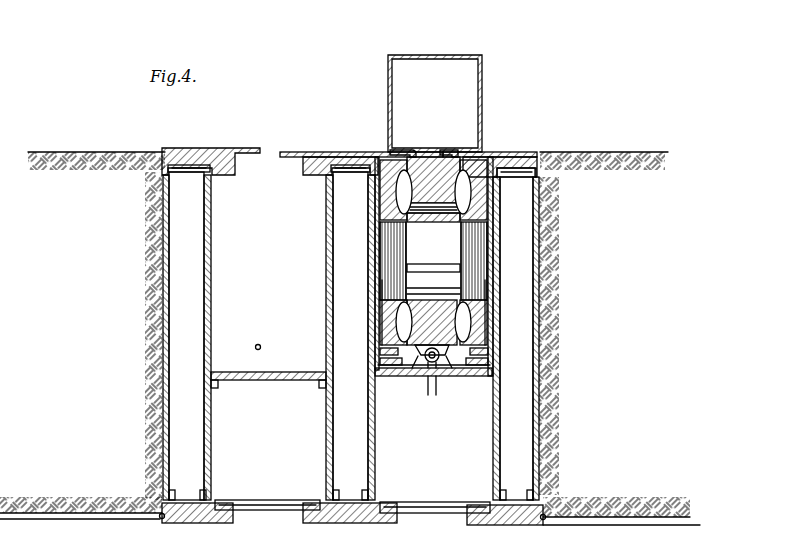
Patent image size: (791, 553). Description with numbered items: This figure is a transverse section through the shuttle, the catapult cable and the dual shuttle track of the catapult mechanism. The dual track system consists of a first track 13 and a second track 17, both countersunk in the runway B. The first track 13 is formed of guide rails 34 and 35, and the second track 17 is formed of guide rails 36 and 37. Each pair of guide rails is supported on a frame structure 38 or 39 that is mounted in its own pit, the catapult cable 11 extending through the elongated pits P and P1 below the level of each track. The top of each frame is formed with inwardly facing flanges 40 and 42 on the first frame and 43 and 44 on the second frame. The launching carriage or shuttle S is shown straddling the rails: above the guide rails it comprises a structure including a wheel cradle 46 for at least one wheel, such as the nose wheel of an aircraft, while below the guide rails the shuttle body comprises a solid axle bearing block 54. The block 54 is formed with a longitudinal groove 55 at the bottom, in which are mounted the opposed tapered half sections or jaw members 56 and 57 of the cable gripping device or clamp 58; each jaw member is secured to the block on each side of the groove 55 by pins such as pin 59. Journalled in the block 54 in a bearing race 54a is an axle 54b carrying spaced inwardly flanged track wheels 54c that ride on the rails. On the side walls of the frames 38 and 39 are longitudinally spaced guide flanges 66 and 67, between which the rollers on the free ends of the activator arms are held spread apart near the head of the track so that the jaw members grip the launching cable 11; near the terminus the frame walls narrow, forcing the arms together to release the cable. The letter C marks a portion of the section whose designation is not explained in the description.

The runway B is at (628, 152).
The guide rail 34 is at (210, 137).
The frame structure 38 is at (162, 180).
The inwardly facing flange 40 is at (238, 168).
The guide rail 35 is at (335, 152).
The first track 13 is at (303, 146).
The inwardly facing flange 42 is at (312, 168).
The inwardly facing flange 43 is at (372, 192).
The wheel cradle 46 is at (413, 56).
The shuttle S is at (468, 55).
The guide rail 36 is at (395, 140).
The guide rail 37 is at (509, 152).
The second track 17 is at (522, 152).
The inwardly facing flange 44 is at (510, 177).
The frame structure 39 is at (530, 252).
The cable gripping device 58 is at (372, 386).
The guide flange 66 is at (340, 372).
The elongated pit P is at (251, 262).
The catapult cable 11 is at (262, 344).
The casing C is at (494, 340).
The axle bearing block 54 is at (445, 316).
The axle 54b is at (388, 262).
The bearing race 54a is at (485, 296).
The track wheel 54c is at (375, 346).
The jaw member 56 is at (420, 366).
The jaw member 57 is at (448, 378).
The elongated pit P1 is at (476, 352).
The guide flange 67 is at (490, 368).
The longitudinal groove 55 is at (478, 386).
The pin 59 is at (494, 396).